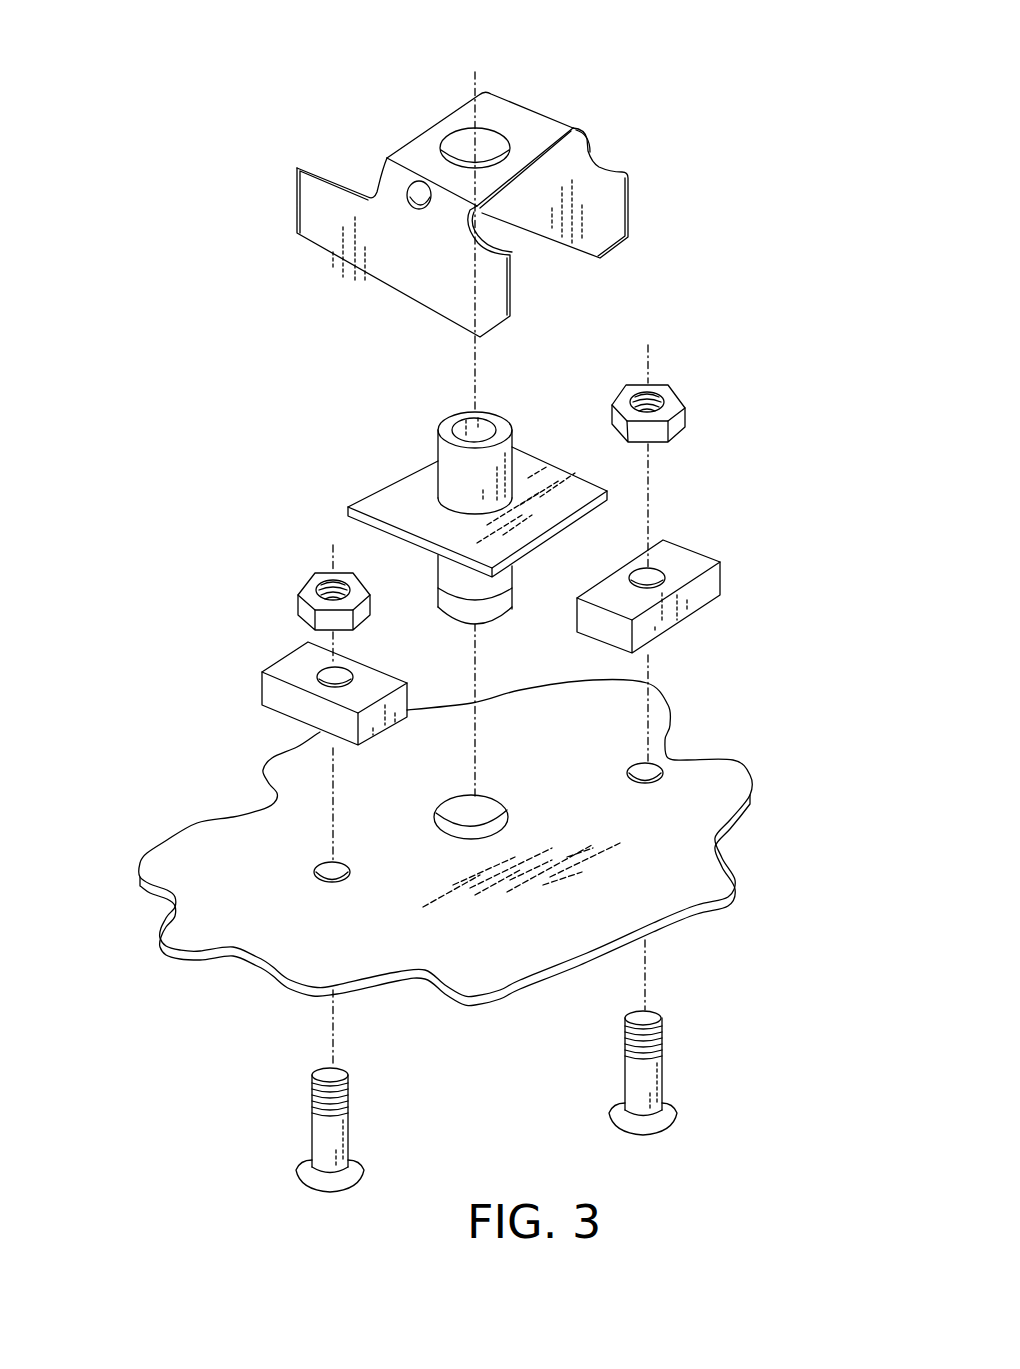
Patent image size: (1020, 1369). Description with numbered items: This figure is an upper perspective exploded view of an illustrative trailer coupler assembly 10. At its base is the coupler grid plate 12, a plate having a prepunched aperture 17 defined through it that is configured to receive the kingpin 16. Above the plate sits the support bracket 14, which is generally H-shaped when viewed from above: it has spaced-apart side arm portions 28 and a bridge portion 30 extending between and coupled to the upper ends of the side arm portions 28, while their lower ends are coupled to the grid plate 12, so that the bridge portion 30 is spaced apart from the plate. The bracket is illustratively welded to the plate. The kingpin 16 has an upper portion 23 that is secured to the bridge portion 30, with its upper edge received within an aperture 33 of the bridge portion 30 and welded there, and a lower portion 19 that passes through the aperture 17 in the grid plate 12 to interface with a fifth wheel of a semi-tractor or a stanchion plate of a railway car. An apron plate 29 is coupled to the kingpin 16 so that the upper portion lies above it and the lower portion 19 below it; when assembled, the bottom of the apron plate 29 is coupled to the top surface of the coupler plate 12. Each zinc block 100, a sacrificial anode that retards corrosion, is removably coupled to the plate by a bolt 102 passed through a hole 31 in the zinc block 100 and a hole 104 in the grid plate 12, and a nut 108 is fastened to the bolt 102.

The trailer coupler assembly 10 is at (202, 75).
The coupler grid plate 12 is at (170, 905).
The support bracket 14 is at (580, 85).
The kingpin 16 is at (403, 419).
The aperture 17 is at (483, 803).
The lower portion of the kingpin 19 is at (457, 607).
The upper portion of the kingpin 23 is at (447, 477).
The side arm portion 28 is at (415, 273).
The apron plate 29 is at (548, 498).
The bridge portion 30 is at (549, 144).
The hole in zinc block 31 is at (270, 704).
The aperture of the bridge portion 33 is at (486, 143).
The zinc block 100 is at (673, 561).
The bolt 102 is at (310, 1137).
The hole in coupler grid plate 104 is at (666, 758).
The nut 108 is at (670, 398).